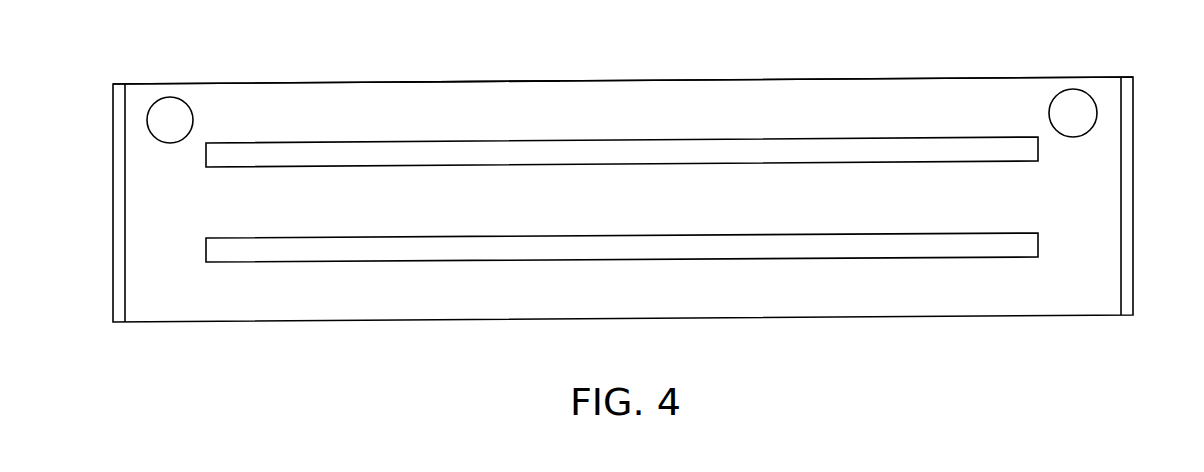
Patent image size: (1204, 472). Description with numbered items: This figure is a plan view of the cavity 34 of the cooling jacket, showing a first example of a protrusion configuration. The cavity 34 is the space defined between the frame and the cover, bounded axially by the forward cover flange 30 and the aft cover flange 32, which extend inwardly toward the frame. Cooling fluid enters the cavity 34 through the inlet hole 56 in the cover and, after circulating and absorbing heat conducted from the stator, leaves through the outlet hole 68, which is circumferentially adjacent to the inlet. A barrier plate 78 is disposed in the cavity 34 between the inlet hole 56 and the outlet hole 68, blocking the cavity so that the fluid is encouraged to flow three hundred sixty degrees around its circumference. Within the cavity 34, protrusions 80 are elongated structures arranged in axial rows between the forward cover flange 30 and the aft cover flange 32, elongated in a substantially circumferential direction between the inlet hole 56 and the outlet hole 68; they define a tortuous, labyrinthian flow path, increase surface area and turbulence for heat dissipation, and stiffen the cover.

The forward cover flange 30 is at (817, 318).
The aft cover flange 32 is at (665, 78).
The cavity 34 is at (468, 88).
The inlet hole 56 is at (182, 119).
The outlet hole 68 is at (1052, 115).
The barrier plate 78 is at (112, 192).
The protrusion 80 is at (307, 165).